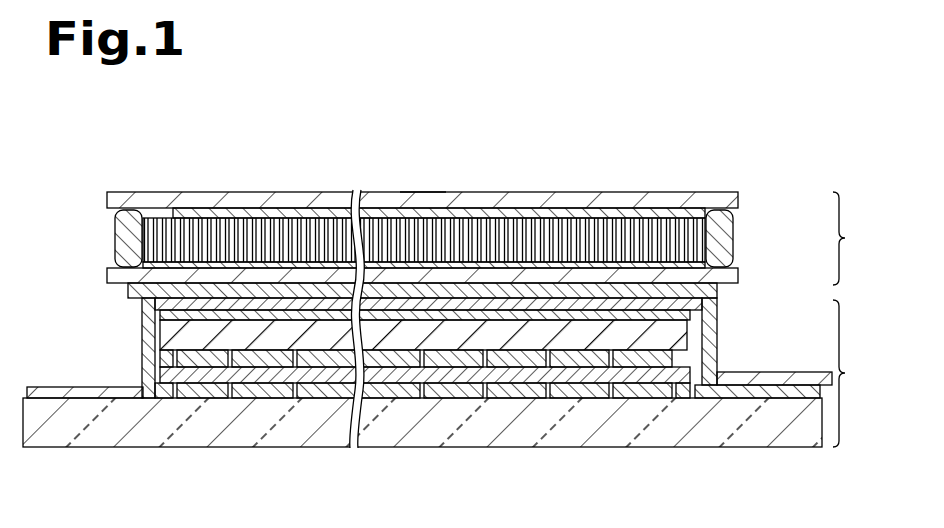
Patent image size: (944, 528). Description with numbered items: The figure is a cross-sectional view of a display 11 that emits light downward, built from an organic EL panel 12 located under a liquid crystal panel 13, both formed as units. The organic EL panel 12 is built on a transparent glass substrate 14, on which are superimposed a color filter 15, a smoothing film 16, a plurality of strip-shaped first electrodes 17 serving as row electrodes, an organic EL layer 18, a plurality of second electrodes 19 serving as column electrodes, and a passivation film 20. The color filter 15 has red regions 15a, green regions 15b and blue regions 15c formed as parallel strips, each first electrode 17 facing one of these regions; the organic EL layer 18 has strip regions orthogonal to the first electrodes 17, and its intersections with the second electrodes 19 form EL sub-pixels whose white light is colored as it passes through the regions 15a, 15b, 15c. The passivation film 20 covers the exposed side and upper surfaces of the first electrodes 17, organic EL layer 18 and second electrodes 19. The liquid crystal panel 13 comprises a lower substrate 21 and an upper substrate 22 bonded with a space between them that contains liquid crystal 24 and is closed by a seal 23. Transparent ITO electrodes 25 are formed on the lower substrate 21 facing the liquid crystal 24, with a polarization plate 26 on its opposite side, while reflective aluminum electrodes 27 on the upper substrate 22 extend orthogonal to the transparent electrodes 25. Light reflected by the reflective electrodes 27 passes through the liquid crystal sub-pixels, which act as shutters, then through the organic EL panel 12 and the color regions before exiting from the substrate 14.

The display 11 is at (633, 143).
The organic EL panel 12 is at (859, 373).
The liquid crystal panel 13 is at (859, 238).
The substrate 14 is at (777, 440).
The color filter 15 is at (422, 440).
The red regions 15a is at (205, 398).
The green regions 15b is at (268, 398).
The blue regions 15c is at (332, 398).
The smoothing film 16 is at (187, 398).
The first electrodes 17 is at (166, 353).
The organic EL layer 18 is at (157, 328).
The second electrodes 19 is at (154, 310).
The passivation film 20 is at (141, 300).
The lower substrate 21 is at (738, 276).
The upper substrate 22 is at (697, 193).
The seal 23 is at (735, 212).
The liquid crystal 24 is at (556, 243).
The transparent electrodes 25 is at (733, 238).
The polarization plate 26 is at (719, 303).
The reflective electrodes 27 is at (446, 192).